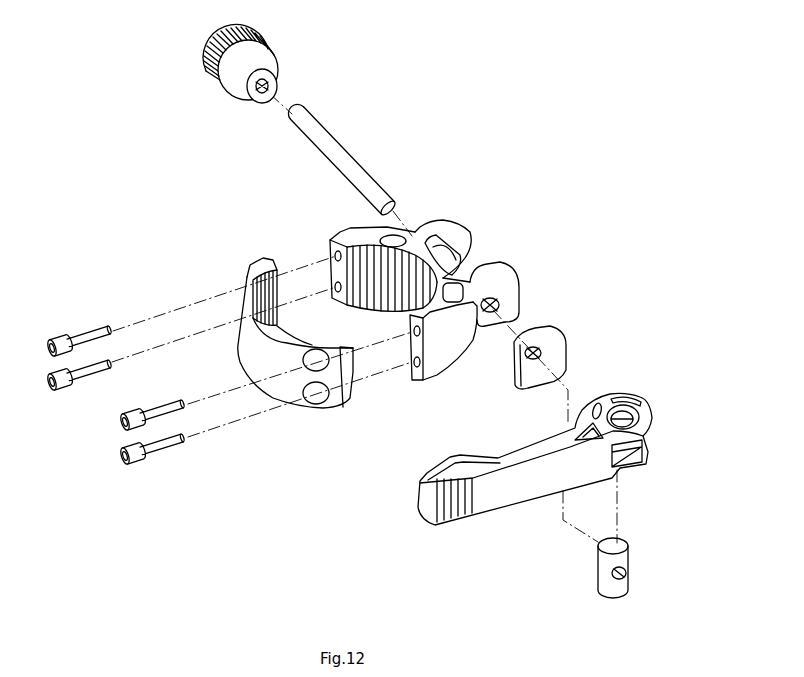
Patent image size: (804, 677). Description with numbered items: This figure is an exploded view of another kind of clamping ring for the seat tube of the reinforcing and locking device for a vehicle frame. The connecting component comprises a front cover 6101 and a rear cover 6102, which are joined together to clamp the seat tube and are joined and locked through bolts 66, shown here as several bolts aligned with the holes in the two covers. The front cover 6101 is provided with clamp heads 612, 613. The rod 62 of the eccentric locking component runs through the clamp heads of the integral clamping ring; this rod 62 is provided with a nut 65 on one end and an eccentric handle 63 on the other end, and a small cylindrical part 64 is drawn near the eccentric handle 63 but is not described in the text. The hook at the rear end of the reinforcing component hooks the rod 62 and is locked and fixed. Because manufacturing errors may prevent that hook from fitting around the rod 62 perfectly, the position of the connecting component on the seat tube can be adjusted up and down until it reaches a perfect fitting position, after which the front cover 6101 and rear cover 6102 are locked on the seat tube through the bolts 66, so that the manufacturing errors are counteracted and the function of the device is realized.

The nut 65 is at (268, 55).
The rod 62 is at (350, 157).
The front cover 6101 is at (355, 232).
The rear cover 6102 is at (255, 272).
The clamp head 612 is at (457, 242).
The clamp head 613 is at (507, 295).
The bolts 66 is at (120, 440).
The eccentric handle 63 is at (510, 493).
The bushing 64 is at (630, 552).